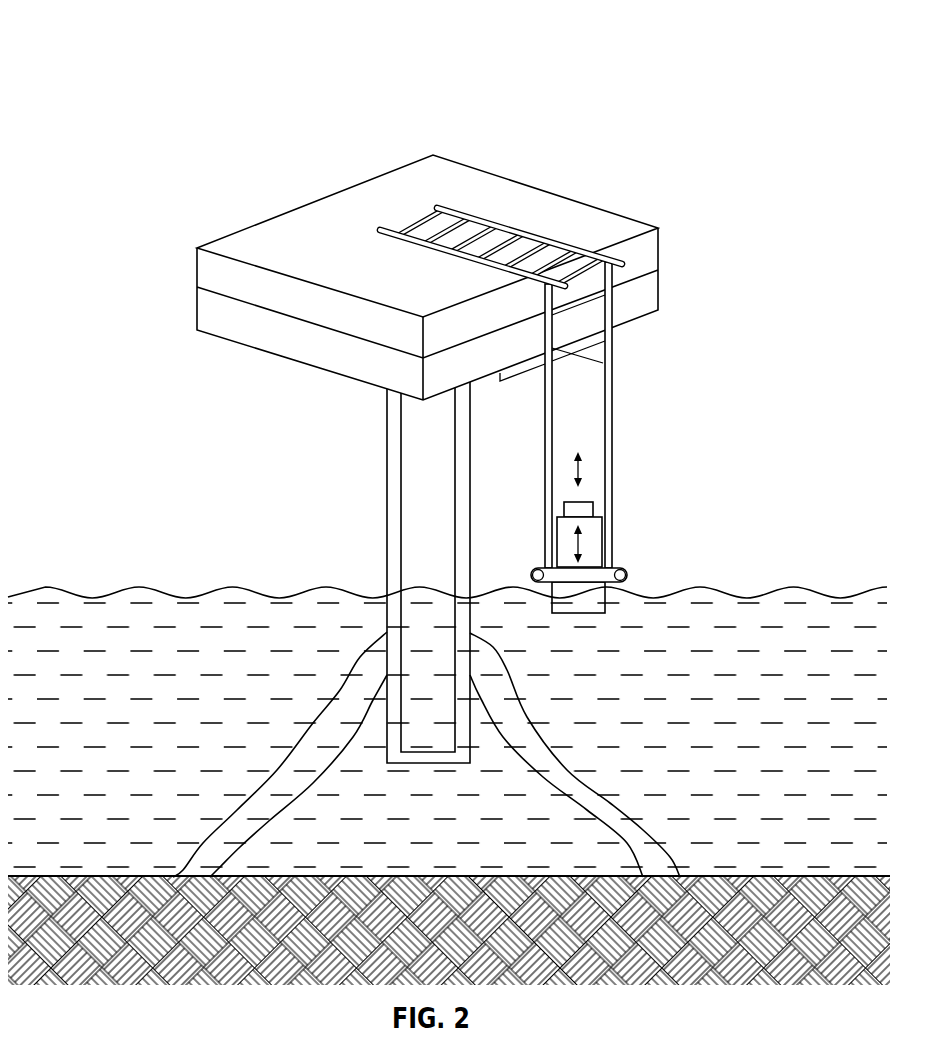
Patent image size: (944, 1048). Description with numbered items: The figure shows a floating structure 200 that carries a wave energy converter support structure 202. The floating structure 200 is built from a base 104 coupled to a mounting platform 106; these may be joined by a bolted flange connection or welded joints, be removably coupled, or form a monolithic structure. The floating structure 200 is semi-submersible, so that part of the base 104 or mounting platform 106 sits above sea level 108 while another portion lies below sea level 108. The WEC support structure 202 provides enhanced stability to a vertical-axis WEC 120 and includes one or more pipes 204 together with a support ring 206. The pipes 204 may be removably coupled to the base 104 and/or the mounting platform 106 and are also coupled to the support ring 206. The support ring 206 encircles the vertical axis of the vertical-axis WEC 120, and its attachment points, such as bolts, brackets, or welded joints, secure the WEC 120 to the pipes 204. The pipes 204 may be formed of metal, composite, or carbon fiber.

The floating structure 200 is at (135, 52).
The mounting platform 106 is at (660, 250).
The base 104 is at (387, 480).
The WEC support structure 202 is at (547, 388).
The pipes 204 is at (612, 440).
The vertical-axis WEC 120 is at (602, 540).
The support ring 206 is at (627, 573).
The sea level 108 is at (803, 587).